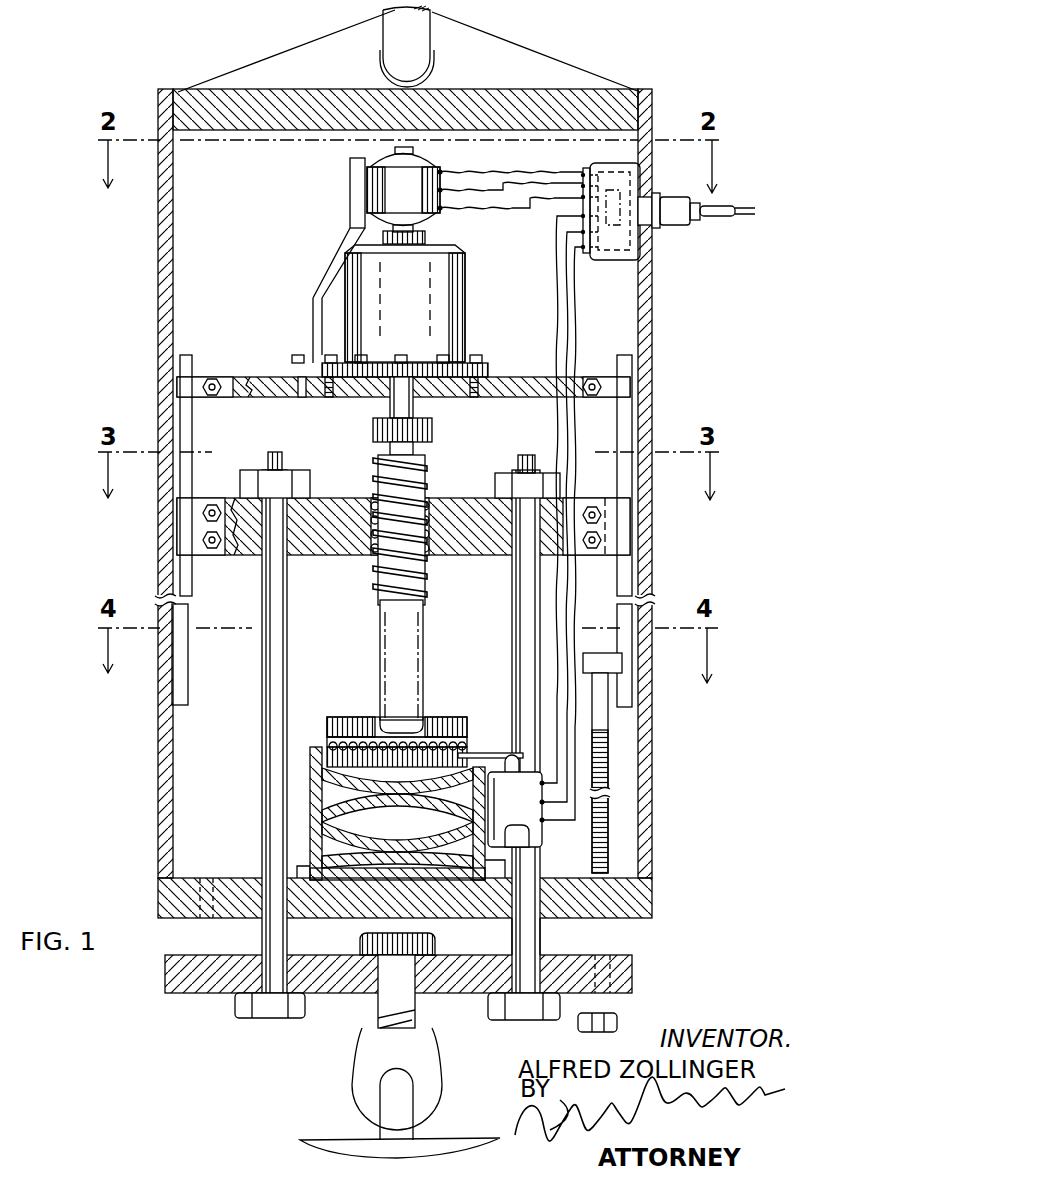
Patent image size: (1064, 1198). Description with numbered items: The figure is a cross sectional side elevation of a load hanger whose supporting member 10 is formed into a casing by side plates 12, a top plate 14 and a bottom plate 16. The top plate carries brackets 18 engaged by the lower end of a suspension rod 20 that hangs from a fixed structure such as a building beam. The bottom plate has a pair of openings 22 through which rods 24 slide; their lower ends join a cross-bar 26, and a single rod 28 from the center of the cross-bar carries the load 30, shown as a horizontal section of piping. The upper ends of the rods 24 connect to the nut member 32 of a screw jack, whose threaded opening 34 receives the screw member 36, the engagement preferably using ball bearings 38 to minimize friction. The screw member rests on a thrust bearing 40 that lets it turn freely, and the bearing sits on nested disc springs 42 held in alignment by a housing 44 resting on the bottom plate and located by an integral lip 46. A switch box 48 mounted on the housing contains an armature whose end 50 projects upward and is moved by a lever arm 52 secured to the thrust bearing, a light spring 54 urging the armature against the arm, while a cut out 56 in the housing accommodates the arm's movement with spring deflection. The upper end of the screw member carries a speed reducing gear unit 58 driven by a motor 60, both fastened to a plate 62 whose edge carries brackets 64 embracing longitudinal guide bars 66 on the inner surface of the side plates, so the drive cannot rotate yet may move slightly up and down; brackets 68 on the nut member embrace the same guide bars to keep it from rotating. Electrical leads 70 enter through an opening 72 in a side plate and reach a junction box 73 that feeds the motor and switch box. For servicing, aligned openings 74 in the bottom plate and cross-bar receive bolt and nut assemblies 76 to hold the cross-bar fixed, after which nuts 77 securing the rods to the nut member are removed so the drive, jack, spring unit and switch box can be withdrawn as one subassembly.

The supporting member 10 is at (680, 386).
The side plates 12 is at (640, 720).
The top plate 14 is at (565, 93).
The bottom plate 16 is at (224, 920).
The brackets 18 is at (483, 42).
The suspension rod 20 is at (400, 33).
The openings 22 is at (556, 919).
The rods 24 is at (276, 946).
The cross-bar 26 is at (462, 994).
The rod 28 is at (378, 1012).
The load 30 is at (340, 1140).
The nut member 32 is at (478, 556).
The threaded opening 34 is at (374, 553).
The screw member 36 is at (380, 481).
The ball bearings 38 is at (430, 494).
The thrust bearing 40 is at (328, 722).
The disc springs 42 is at (330, 840).
The housing 44 is at (312, 853).
The lip 46 is at (300, 873).
The switch box 48 is at (544, 828).
The armature end 50 is at (512, 765).
The lever arm 52 is at (506, 755).
The light spring 54 is at (530, 840).
The cut out 56 is at (478, 738).
The speed reducing gear unit 58 is at (455, 302).
The motor 60 is at (440, 173).
The plate 62 is at (318, 390).
The brackets 64 is at (600, 377).
The guide bars 66 is at (186, 434).
The brackets 68 is at (206, 499).
The electrical leads 70 is at (634, 177).
The opening 72 is at (650, 235).
The junction box 73 is at (616, 262).
The aligned openings 74 is at (200, 945).
The bolt and nut assemblies 76 is at (606, 743).
The nuts 77 is at (505, 472).